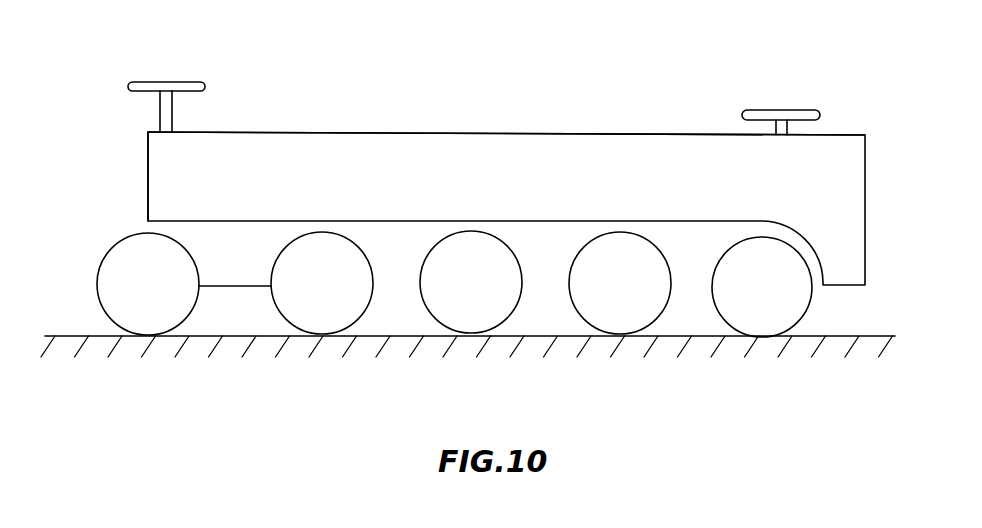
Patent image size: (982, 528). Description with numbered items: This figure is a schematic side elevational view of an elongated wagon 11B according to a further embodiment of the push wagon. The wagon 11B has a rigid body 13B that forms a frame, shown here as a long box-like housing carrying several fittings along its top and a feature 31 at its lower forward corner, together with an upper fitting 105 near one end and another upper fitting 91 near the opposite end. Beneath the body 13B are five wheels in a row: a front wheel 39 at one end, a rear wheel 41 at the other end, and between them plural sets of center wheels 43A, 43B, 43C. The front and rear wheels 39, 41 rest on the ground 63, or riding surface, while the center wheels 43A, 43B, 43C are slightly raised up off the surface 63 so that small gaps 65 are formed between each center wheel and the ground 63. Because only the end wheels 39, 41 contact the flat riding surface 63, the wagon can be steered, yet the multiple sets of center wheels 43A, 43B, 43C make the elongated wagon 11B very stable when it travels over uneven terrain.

The elongated wagon 11B is at (604, 135).
The body 13B is at (362, 133).
The front end of body 31 is at (147, 221).
The front knob 105 is at (205, 80).
The rear knob 91 is at (770, 110).
The rear wheels 41 is at (102, 288).
The center wheels 43A is at (347, 240).
The center wheels 43B is at (491, 248).
The center wheels 43C is at (642, 250).
The front wheels 39 is at (764, 320).
The gaps 65 is at (443, 332).
The riding surface 63 is at (843, 338).